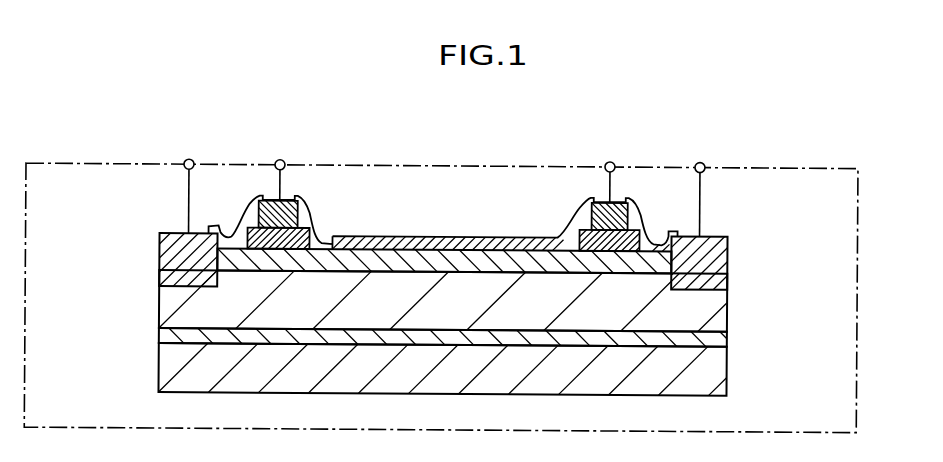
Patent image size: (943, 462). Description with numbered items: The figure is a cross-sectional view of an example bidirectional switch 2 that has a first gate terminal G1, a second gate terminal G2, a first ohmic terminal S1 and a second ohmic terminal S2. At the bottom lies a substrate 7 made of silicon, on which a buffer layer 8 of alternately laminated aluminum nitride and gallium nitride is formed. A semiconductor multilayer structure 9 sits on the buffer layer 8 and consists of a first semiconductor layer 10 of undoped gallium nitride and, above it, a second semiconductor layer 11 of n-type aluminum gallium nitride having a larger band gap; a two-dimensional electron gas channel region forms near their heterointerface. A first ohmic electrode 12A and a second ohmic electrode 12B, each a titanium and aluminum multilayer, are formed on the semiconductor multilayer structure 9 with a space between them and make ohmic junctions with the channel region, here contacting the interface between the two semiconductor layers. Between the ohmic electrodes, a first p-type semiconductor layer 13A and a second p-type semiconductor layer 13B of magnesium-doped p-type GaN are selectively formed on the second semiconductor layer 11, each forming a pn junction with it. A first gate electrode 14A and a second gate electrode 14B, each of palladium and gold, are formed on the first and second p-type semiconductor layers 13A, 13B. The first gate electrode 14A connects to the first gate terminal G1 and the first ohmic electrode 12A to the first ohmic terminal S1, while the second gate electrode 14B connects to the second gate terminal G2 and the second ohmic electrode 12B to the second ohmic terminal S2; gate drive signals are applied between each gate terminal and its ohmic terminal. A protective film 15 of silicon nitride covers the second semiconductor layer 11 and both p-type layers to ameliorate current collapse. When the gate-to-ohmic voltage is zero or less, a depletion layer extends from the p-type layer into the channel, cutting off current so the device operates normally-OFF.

The bidirectional switch 2 is at (858, 217).
The substrate 7 is at (728, 383).
The buffer layer 8 is at (728, 338).
The semiconductor multilayer structure 9 is at (496, 297).
The first semiconductor layer 10 is at (728, 318).
The second semiconductor layer 11 is at (625, 270).
The first ohmic electrode 12A is at (160, 260).
The second ohmic electrode 12B is at (729, 260).
The first p-type semiconductor layer 13A is at (310, 236).
The second p-type semiconductor layer 13B is at (580, 240).
The first gate electrode 14A is at (298, 214).
The second gate electrode 14B is at (592, 215).
The protective film 15 is at (672, 228).
The first ohmic terminal S1 is at (184, 163).
The first gate terminal G1 is at (284, 160).
The second gate terminal G2 is at (606, 160).
The second ohmic terminal S2 is at (705, 163).